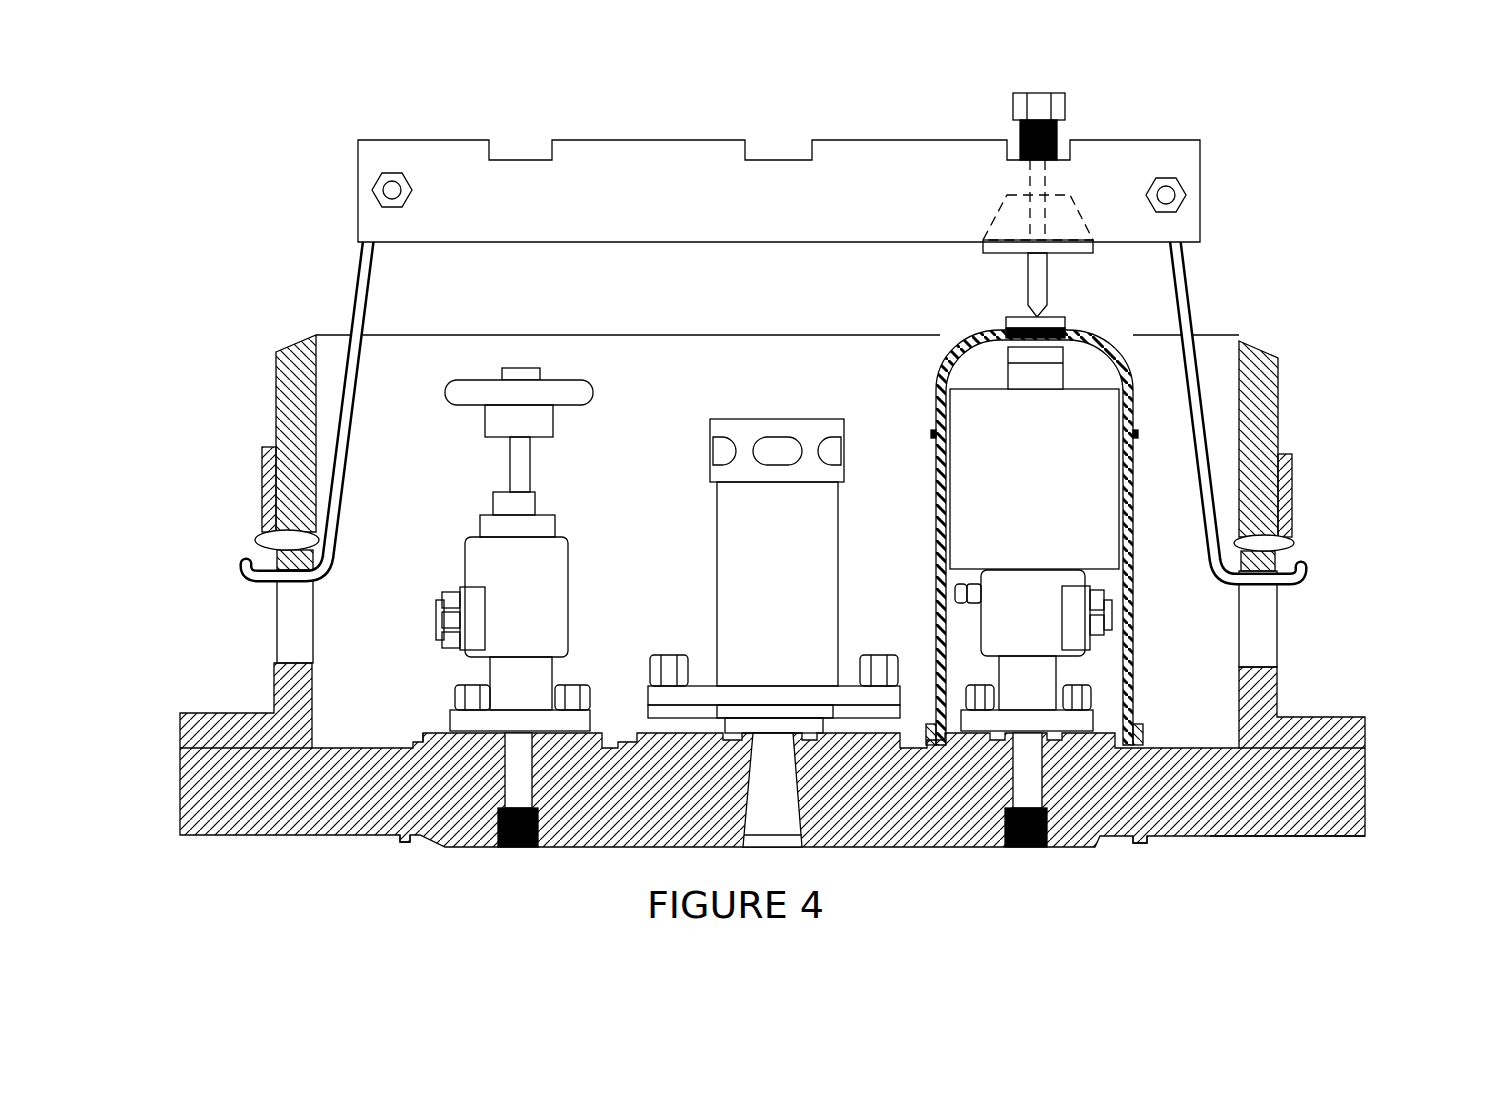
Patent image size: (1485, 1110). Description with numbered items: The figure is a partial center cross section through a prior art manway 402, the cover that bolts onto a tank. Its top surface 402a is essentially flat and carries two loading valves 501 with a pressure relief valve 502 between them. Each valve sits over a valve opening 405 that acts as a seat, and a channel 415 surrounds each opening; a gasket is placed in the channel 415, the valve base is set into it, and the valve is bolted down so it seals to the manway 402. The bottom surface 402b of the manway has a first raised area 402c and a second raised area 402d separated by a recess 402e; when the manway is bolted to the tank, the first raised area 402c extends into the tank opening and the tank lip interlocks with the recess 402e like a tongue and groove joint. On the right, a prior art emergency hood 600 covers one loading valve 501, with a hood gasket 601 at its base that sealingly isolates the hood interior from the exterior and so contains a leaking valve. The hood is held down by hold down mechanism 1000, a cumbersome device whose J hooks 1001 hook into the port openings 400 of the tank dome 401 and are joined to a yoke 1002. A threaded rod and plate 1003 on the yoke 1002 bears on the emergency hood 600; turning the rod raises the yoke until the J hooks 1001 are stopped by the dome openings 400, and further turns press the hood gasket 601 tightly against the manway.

The hood hold down mechanism 1000 is at (780, 140).
The J hooks 1001 is at (362, 290).
The yoke 1002 is at (677, 209).
The threaded rod and plate 1003 is at (1040, 93).
The emergency hood 600 is at (975, 335).
The hood gasket 601 is at (1143, 745).
The tank dome 401 is at (1280, 390).
The port openings 400 is at (288, 625).
The loading valves 501 is at (553, 605).
The pressure relief valve 502 is at (796, 605).
The manway 402 is at (1367, 800).
The top surface 402a is at (362, 745).
The bottom surface 402b is at (1213, 840).
The first raised area 402c is at (557, 847).
The second raised area 402d is at (1137, 840).
The recess 402e is at (423, 837).
The valve opening 405 is at (950, 735).
The channels 415 is at (553, 735).